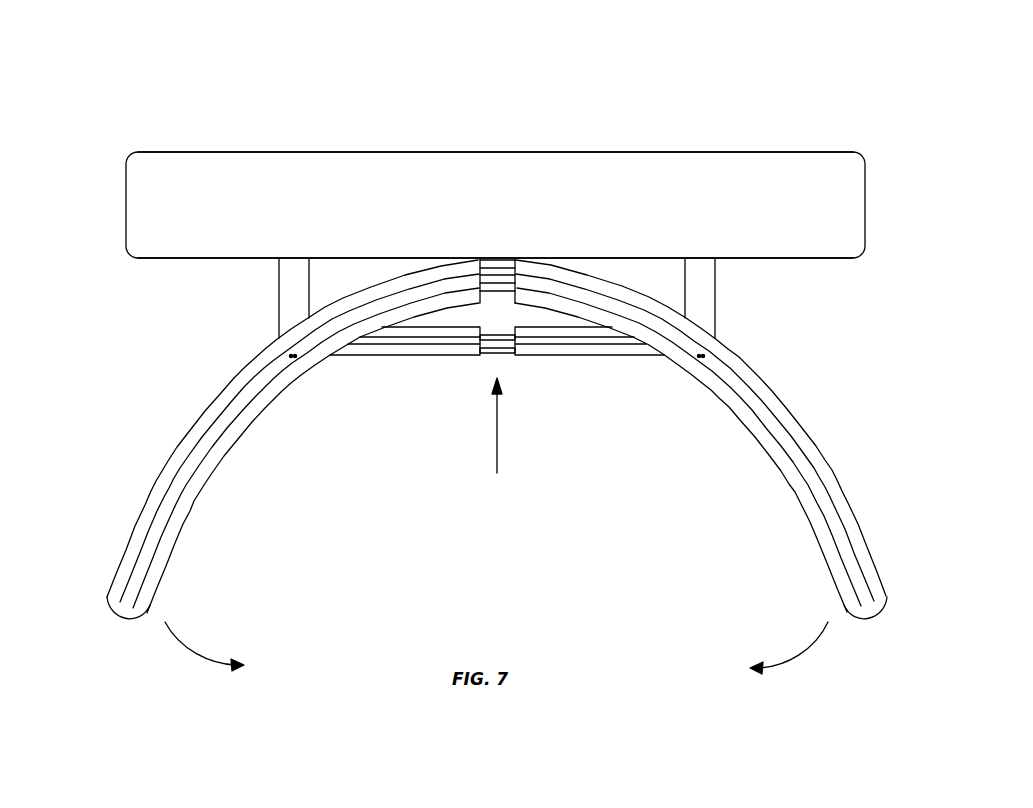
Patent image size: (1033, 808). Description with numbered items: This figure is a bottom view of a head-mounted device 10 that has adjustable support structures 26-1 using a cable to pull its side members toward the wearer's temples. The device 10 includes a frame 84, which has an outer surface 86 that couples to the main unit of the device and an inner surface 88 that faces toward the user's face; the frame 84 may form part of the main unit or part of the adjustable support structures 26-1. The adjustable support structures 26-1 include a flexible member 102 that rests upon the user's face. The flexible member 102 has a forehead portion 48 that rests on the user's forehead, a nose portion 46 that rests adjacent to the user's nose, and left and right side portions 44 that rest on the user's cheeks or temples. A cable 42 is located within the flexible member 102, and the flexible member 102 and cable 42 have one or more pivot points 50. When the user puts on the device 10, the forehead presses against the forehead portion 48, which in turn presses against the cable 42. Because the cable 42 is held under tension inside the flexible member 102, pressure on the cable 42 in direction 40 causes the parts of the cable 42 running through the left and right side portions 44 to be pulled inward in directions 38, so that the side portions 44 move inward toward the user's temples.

The head-mounted device 10 is at (650, 72).
The frame 84 is at (770, 172).
The outer surface 86 is at (243, 152).
The inner surface 88 is at (171, 260).
The adjustable support structures 26-1 is at (82, 262).
The nose portion 46 is at (427, 288).
The left and right side portions 44 is at (158, 484).
The flexible member 102 is at (190, 510).
The forehead portion 48 is at (573, 341).
The cable 42 is at (488, 357).
The pivot points 50 is at (290, 355).
The direction 40 is at (503, 429).
The directions 38 is at (198, 656).